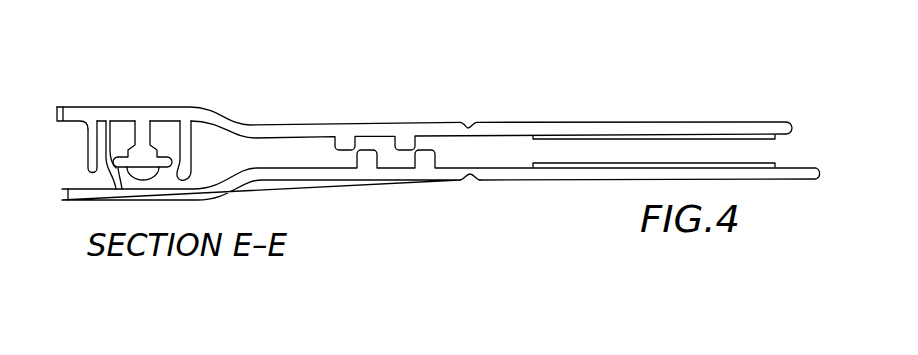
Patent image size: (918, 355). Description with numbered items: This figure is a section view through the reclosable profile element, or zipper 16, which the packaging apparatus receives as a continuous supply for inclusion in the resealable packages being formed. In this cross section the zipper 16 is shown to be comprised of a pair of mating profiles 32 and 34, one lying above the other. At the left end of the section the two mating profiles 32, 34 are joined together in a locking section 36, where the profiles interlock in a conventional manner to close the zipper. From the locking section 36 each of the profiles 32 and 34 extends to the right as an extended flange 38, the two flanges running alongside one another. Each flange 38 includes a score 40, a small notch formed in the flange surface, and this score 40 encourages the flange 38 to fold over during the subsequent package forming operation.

The zipper 16 is at (329, 88).
The mating profile 32 is at (254, 126).
The mating profile 34 is at (313, 181).
The locking section 36 is at (137, 95).
The extended flange 38 is at (418, 122).
The score 40 is at (472, 122).